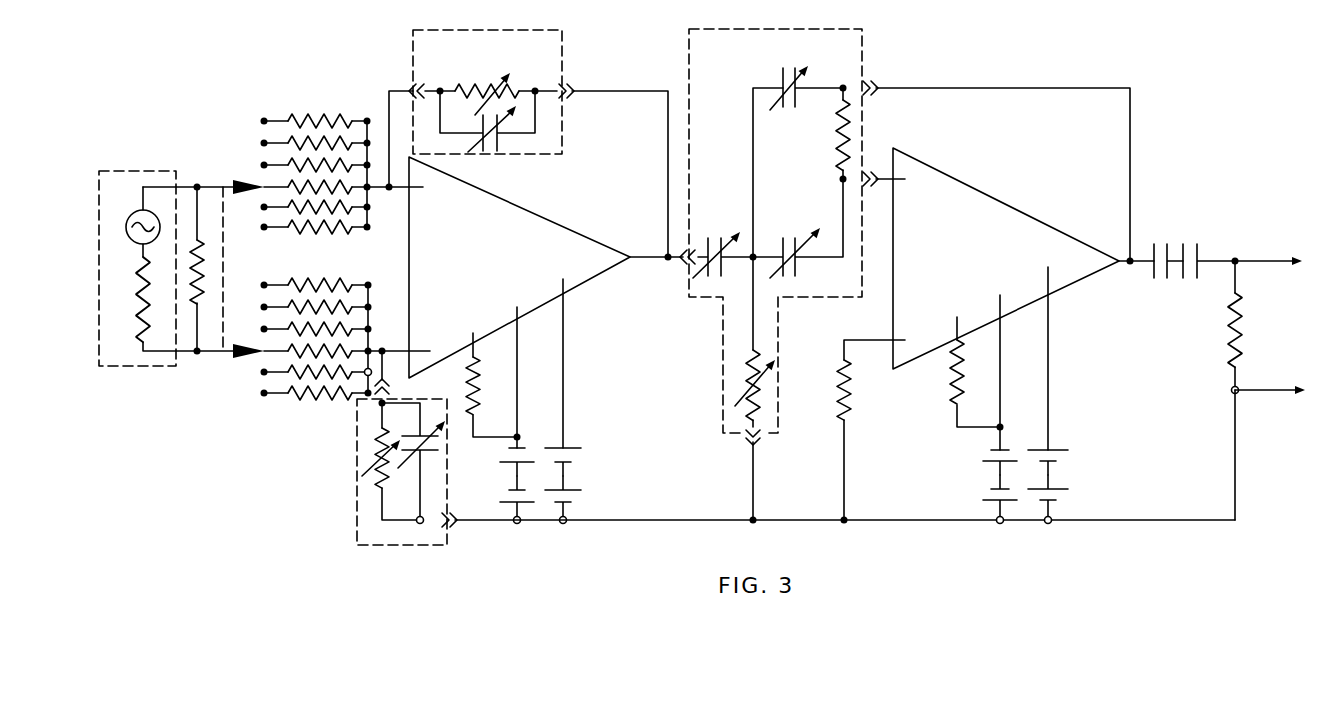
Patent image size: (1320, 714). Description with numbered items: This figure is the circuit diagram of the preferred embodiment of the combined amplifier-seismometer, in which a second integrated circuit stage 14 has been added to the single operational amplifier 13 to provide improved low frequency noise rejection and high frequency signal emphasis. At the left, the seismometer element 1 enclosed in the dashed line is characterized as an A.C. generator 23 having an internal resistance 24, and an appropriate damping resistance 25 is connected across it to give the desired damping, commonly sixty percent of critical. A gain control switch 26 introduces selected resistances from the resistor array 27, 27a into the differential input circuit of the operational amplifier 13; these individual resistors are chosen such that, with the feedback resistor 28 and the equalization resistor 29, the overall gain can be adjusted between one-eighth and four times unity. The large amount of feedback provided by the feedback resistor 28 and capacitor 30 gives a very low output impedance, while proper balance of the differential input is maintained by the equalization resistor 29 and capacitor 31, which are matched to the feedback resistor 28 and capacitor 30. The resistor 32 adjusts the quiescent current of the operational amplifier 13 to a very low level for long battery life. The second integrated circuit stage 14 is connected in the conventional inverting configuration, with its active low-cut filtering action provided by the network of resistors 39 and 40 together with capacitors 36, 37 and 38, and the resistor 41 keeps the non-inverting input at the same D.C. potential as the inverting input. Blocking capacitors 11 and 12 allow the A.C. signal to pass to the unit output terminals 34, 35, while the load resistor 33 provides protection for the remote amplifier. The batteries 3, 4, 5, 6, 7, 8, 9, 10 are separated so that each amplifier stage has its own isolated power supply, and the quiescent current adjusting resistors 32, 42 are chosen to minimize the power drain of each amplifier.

The seismometer element 1 is at (150, 170).
The battery 3 is at (508, 453).
The battery 4 is at (508, 500).
The battery 5 is at (573, 453).
The battery 6 is at (582, 513).
The battery 7 is at (990, 451).
The battery 8 is at (990, 497).
The battery 9 is at (1072, 507).
The battery 10 is at (1066, 451).
The blocking capacitor 11 is at (1152, 240).
The blocking capacitor 12 is at (1190, 240).
The operational amplifier 13 is at (527, 213).
The second integrated circuit stage 14 is at (948, 177).
The A.C. generator 23 is at (133, 212).
The internal resistance 24 is at (143, 290).
The damping resistance 25 is at (205, 278).
The gain control switch 26 is at (209, 358).
The resistor array 27 is at (320, 118).
The resistor array 27a is at (320, 285).
The feedback resistor 28 is at (375, 456).
The equalization resistor 29 is at (495, 80).
The capacitor 30 is at (502, 143).
The capacitor 31 is at (440, 446).
The resistor 32 is at (481, 382).
The resistor 33 is at (1243, 347).
The unit output terminal 34 is at (1268, 248).
The unit output terminal 35 is at (1270, 405).
The capacitor 36 is at (722, 238).
The capacitor 37 is at (785, 216).
The capacitor 38 is at (783, 72).
The resistor 39 is at (850, 119).
The resistor 40 is at (745, 397).
The resistor 41 is at (850, 396).
The quiescent current adjusting resistor 42 is at (953, 409).